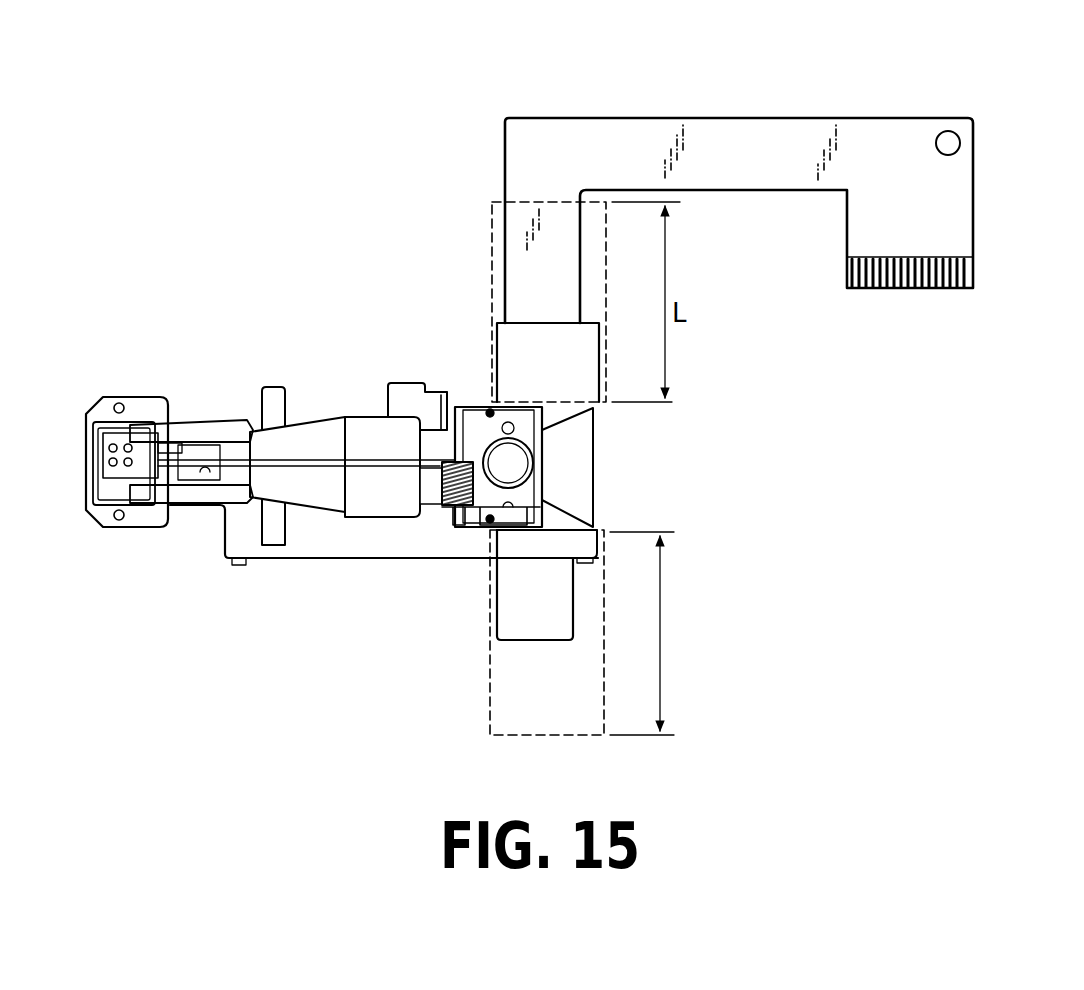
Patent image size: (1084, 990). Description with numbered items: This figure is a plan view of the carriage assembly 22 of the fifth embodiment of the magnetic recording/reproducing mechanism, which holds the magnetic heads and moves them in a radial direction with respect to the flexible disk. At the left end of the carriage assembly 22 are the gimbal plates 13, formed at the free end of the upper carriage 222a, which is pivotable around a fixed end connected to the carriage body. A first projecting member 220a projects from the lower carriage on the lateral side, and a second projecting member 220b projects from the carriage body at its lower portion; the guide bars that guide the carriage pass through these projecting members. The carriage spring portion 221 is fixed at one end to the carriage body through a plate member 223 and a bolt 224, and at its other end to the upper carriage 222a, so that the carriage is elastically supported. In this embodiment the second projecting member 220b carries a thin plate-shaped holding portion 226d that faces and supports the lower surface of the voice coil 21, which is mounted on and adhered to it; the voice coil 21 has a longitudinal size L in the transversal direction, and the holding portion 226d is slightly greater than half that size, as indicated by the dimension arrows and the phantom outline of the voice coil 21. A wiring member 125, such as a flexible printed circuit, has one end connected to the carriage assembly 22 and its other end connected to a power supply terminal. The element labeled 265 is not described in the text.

The gimbal plates 13 is at (112, 396).
The voice coil 21 is at (489, 230).
The carriage assembly 22 is at (226, 408).
The wiring member 125 is at (810, 118).
The first projecting member 220a is at (282, 410).
The second projecting member 220b is at (404, 382).
The carriage spring portion 221 is at (428, 495).
The upper carriage 222a is at (197, 418).
The plate member 223 is at (440, 432).
The bolt 224 is at (520, 466).
The holding portion 226d is at (523, 343).
The optical fiber 265 is at (383, 467).